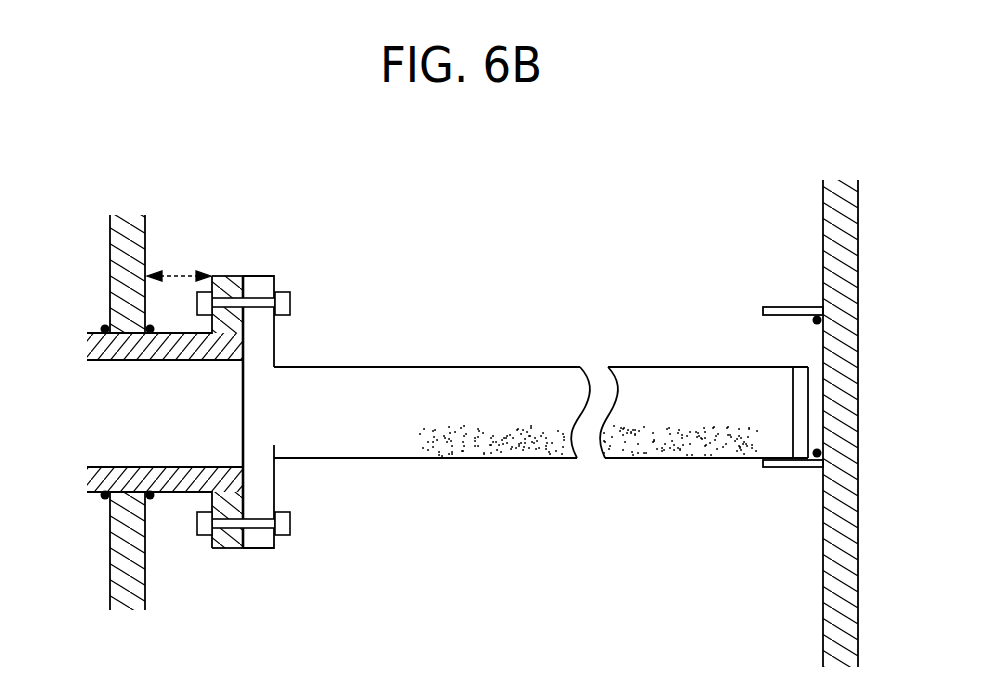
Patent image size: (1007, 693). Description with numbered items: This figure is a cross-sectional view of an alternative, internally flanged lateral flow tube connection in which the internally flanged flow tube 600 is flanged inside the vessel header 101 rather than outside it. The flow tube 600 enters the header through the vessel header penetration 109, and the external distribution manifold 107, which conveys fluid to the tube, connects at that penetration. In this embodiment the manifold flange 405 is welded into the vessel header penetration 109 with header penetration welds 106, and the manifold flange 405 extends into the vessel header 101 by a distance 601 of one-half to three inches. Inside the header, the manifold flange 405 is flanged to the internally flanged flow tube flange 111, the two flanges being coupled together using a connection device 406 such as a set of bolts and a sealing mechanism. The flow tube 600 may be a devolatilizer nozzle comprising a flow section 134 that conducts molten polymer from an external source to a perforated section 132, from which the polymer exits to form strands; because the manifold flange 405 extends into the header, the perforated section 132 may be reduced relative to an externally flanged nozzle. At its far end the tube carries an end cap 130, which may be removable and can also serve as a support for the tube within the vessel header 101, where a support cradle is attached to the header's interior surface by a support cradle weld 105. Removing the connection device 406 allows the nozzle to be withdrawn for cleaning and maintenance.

The vessel header 101 is at (110, 243).
The support cradle weld 105 is at (818, 467).
The header penetration welds 106 is at (103, 497).
The external distribution manifold 107 is at (107, 360).
The vessel header penetration 109 is at (122, 468).
The internally flanged flow tube flange 111 is at (257, 548).
The end cap 130 is at (778, 367).
The perforated section 132 is at (530, 443).
The flow section 134 is at (274, 447).
The manifold flange 405 is at (223, 548).
The connection device 406 is at (292, 303).
The internally flanged flow tube 600 is at (724, 367).
The distance 601 is at (176, 275).